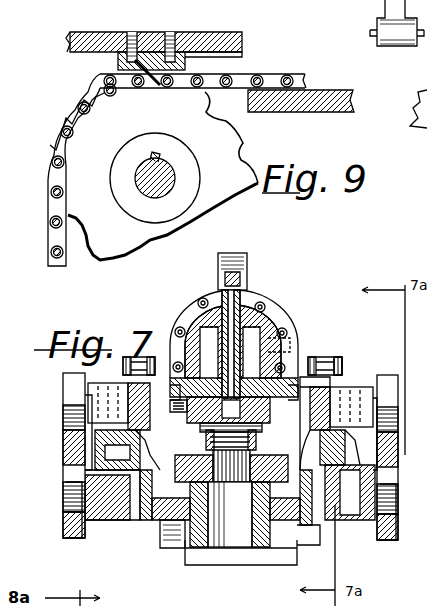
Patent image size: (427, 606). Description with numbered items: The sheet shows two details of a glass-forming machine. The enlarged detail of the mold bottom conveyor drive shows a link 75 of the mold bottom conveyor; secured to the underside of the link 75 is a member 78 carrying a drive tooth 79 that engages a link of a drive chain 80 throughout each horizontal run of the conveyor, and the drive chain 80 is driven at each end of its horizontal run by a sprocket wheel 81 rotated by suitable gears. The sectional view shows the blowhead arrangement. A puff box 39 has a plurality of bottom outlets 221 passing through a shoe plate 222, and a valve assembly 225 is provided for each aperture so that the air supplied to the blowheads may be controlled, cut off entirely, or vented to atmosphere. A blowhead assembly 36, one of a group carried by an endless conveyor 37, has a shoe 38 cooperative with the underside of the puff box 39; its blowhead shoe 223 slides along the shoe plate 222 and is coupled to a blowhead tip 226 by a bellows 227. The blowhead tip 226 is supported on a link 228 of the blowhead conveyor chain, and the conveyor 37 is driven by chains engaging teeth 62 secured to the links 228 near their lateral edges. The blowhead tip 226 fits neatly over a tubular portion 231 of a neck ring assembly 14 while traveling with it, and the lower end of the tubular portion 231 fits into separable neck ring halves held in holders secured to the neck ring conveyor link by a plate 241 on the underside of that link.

In FIG. 9, the link 75 is at (107, 32).
In FIG. 9, the member 78 is at (205, 62).
In FIG. 9, the drive tooth 79 is at (152, 88).
In FIG. 9, the drive chain 80 is at (283, 68).
In FIG. 9, the sprocket wheel 81 is at (250, 142).
In FIG. 7, the bottom outlet 221 is at (253, 318).
In FIG. 7, the valve assembly 225 is at (248, 290).
In FIG. 7, the puff box 39 is at (233, 395).
In FIG. 7, the shoe 38 is at (270, 418).
In FIG. 7, the shoe plate 222 is at (196, 408).
In FIG. 7, the blowhead shoe 223 is at (197, 432).
In FIG. 7, the bellows 227 is at (252, 438).
In FIG. 7, the blowhead assembly 36 is at (256, 452).
In FIG. 7, the tubular portion 231 is at (238, 535).
In FIG. 7, the plate 241 is at (180, 546).
In FIG. 7, the neck ring 14 is at (162, 545).
In FIG. 7, the blowhead tip 226 is at (160, 498).
In FIG. 7, the link 228 is at (283, 520).
In FIG. 7, the endless conveyor 37 is at (101, 430).
In FIG. 7, the tooth 62 is at (322, 358).